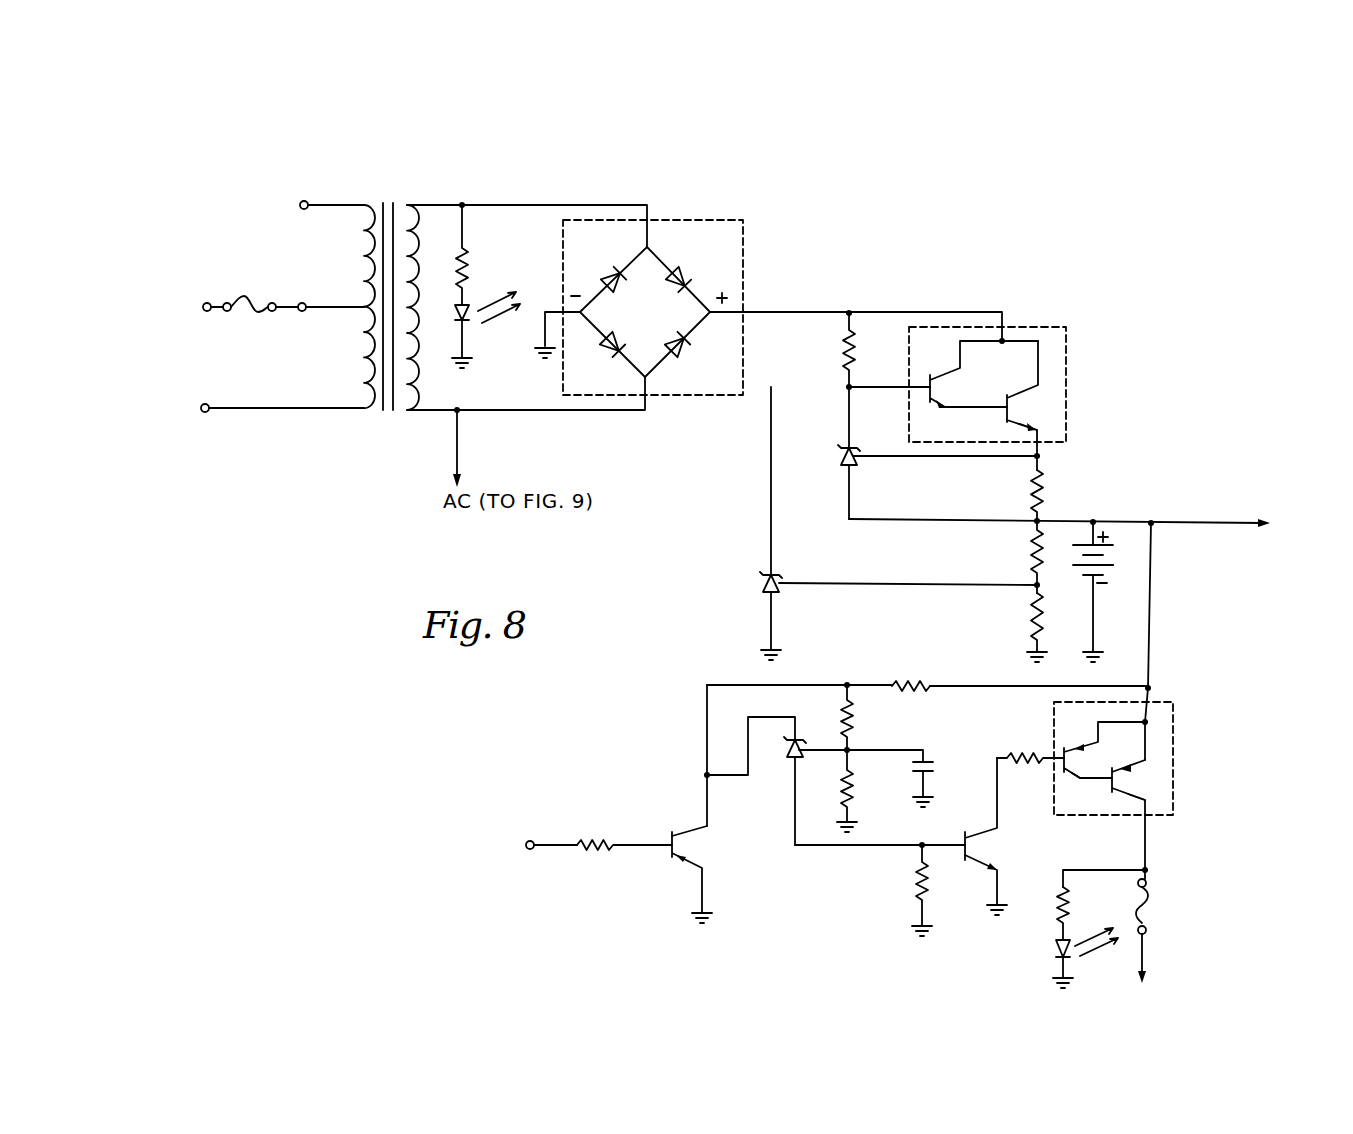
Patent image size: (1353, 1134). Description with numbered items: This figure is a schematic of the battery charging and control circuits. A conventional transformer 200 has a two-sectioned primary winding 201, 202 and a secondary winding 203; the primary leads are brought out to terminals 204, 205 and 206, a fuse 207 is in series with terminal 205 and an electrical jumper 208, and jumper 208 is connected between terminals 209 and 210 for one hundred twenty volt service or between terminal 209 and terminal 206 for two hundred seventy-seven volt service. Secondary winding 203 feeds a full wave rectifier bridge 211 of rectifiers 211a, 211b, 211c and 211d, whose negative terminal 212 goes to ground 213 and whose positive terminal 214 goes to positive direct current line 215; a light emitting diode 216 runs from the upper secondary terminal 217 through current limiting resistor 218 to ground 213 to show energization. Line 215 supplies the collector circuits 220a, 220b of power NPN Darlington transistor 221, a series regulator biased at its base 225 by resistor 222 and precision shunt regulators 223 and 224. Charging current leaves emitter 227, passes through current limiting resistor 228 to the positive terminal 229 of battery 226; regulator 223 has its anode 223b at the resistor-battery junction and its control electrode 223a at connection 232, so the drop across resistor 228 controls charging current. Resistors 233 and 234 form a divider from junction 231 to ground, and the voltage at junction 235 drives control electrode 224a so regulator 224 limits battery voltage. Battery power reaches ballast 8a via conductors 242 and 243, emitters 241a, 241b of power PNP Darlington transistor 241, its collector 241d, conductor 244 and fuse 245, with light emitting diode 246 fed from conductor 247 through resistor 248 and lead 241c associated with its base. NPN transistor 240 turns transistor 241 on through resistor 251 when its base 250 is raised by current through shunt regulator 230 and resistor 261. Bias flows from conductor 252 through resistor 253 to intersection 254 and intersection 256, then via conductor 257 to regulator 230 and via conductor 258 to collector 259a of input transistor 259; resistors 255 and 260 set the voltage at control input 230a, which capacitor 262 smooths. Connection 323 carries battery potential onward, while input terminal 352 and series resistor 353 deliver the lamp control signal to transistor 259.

The transformer 200 is at (383, 430).
The primary winding 201 is at (366, 251).
The primary winding 202 is at (364, 387).
The secondary winding 203 is at (428, 387).
The terminal 204 is at (202, 412).
The terminal 205 is at (208, 305).
The terminal 206 is at (304, 206).
The fuse 207 is at (242, 294).
The electrical jumper 208 is at (281, 311).
The terminal 209 is at (271, 313).
The terminal 210 is at (302, 311).
The full wave rectifier bridge 211 is at (679, 222).
The rectifier 211a is at (610, 266).
The rectifier 211b is at (692, 281).
The rectifier 211c is at (608, 360).
The rectifier 211d is at (690, 360).
The negative terminal 212 is at (589, 313).
The ground 213 is at (545, 352).
The positive terminal 214 is at (714, 321).
The positive direct current line 215 is at (814, 312).
The light emitting diode 216 is at (474, 328).
The upper secondary terminal 217 is at (496, 176).
The current limiting resistor 218 is at (468, 249).
The collector circuit 220a is at (969, 348).
The collector circuit 220b is at (1039, 366).
The power NPN Darlington transistor 221 is at (1048, 328).
The resistor 222 is at (842, 353).
The precision shunt regulator 223 is at (845, 461).
The control electrode 223a is at (866, 459).
The anode 223b is at (845, 506).
The precision shunt regulator 224 is at (765, 587).
The control electrode 224a is at (785, 585).
The base 225 is at (926, 386).
The battery 226 is at (1108, 563).
The emitter 227 is at (1032, 410).
The current limiting resistor 228 is at (1035, 489).
The positive terminal 229 is at (1092, 522).
The precision shunt regulator 230 is at (792, 755).
The control input 230a is at (799, 744).
The junction 231 is at (1036, 527).
The connection 232 is at (1042, 460).
The resistor 233 is at (1035, 553).
The resistor 234 is at (1036, 615).
The junction 235 is at (1032, 591).
The NPN transistor 240 is at (979, 823).
The power PNP Darlington transistor 241 is at (1162, 695).
The emitter 241a is at (1083, 733).
The emitter 241b is at (1139, 766).
The base lead 241c is at (1078, 771).
The collector 241d is at (1140, 795).
The conductor 242 is at (1131, 522).
The conductor 243 is at (1150, 626).
The conductor 244 is at (1145, 848).
The fuse 245 is at (1142, 897).
The light emitting diode 246 is at (1050, 954).
The conductor 247 is at (1086, 868).
The current limiting resistor 248 is at (1070, 895).
The base 250 is at (968, 858).
The resistor 251 is at (1015, 756).
The conductor 252 is at (987, 688).
The resistor 253 is at (912, 683).
The intersection 254 is at (847, 685).
The resistor 255 is at (852, 721).
The intersection 256 is at (703, 777).
The conductor 257 is at (760, 716).
The conductor 258 is at (707, 804).
The input transistor 259 is at (671, 849).
The collector 259a is at (701, 831).
The resistor 260 is at (851, 788).
The resistor 261 is at (916, 884).
The capacitor 262 is at (930, 778).
The connection 323 is at (1220, 522).
The input terminal 352 is at (529, 839).
The series resistor 353 is at (597, 806).
The ballast 8a is at (1245, 986).